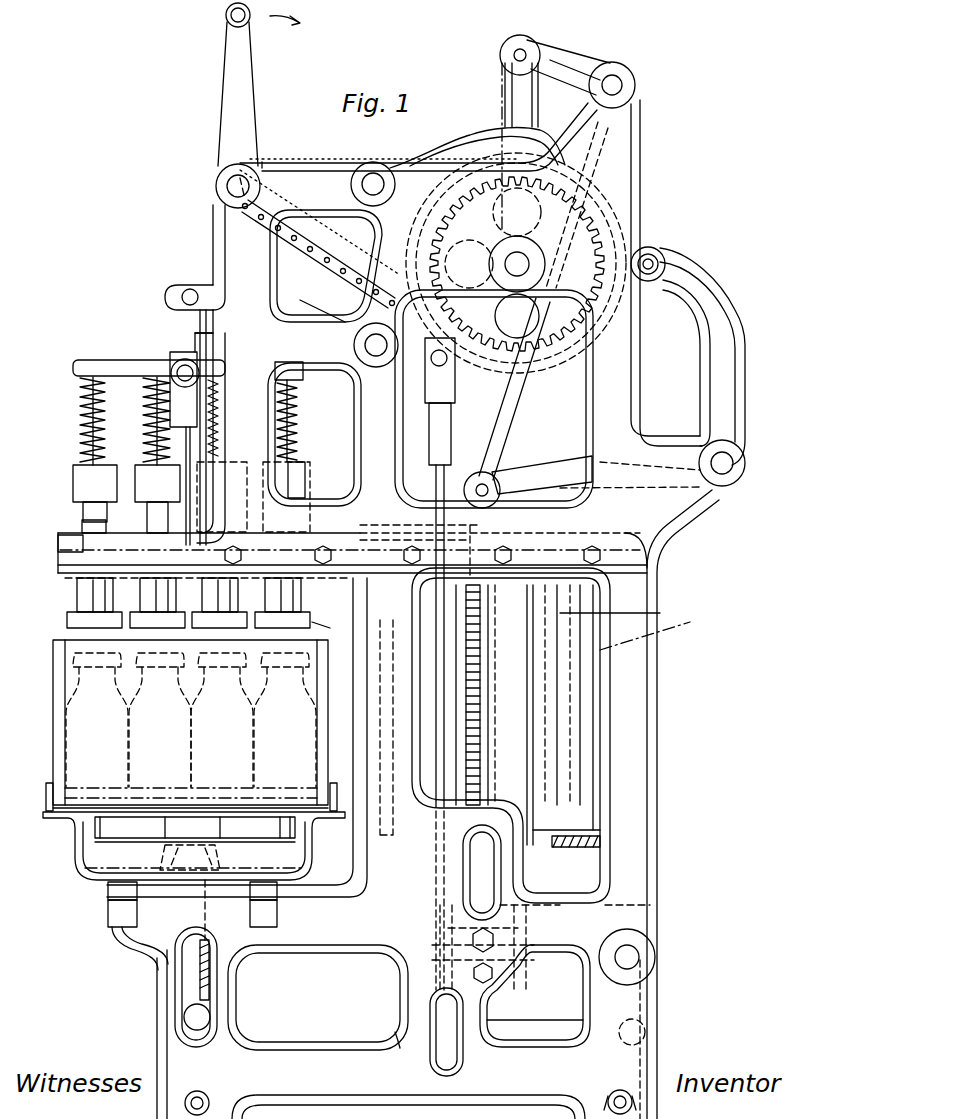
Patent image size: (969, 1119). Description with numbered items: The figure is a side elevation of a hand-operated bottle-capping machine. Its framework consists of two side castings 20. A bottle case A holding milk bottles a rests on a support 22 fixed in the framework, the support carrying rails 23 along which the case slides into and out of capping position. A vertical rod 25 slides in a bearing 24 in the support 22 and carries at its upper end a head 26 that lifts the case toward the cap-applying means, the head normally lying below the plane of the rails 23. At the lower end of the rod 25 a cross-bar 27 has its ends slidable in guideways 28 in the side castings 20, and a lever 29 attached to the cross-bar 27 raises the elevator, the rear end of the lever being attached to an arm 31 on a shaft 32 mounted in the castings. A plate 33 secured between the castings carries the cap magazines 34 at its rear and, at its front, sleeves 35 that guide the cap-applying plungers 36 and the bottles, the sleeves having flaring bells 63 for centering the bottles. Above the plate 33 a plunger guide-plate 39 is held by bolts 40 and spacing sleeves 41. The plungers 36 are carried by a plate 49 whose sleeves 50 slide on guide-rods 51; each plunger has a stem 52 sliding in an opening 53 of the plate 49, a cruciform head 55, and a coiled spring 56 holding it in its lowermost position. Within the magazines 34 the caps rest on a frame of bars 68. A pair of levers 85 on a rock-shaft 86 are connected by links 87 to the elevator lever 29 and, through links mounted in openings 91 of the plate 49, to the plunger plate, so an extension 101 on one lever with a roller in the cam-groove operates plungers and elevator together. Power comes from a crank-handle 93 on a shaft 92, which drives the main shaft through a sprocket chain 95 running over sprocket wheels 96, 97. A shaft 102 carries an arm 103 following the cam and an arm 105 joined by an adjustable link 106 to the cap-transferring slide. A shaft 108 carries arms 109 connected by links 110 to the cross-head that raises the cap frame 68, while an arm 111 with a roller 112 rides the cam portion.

The side castings 20 is at (640, 186).
The support 22 is at (100, 860).
The rails 23 is at (48, 810).
The bearing 24 is at (178, 890).
The vertical rod 25 is at (193, 987).
The head 26 is at (252, 815).
The cross-bar 27 is at (197, 1017).
The guideways 28 is at (210, 968).
The lever 29 is at (395, 1032).
The arm 31 is at (600, 1003).
The shaft 32 is at (640, 952).
The plate 33 is at (68, 578).
The cap magazines 34 is at (660, 613).
The sleeves 35 is at (76, 602).
The cap-applying plungers 36 is at (73, 483).
The plunger guide-plate 39 is at (58, 542).
The bolts 40 is at (82, 520).
The spacing sleeves 41 is at (62, 565).
The plate 49 is at (128, 360).
The sleeves 50 is at (170, 405).
The guide-rods 51 is at (186, 440).
The stem 52 is at (82, 400).
The opening 53 is at (92, 360).
The head 55 is at (302, 478).
The coiled springs 56 is at (298, 432).
The bells 63 is at (337, 631).
The bars 68 is at (548, 848).
The levers 85 is at (412, 420).
The rock-shaft 86 is at (306, 382).
The links 87 is at (436, 478).
The openings 91 is at (518, 263).
The shaft 92 is at (216, 200).
The crank-handle 93 is at (228, 140).
The sprocket chain 95 is at (282, 155).
The sprocket wheel 96 is at (321, 249).
The sprocket wheel 97 is at (318, 256).
The extension 101 is at (519, 107).
The shaft 102 is at (622, 80).
The arm 103 is at (558, 45).
The arm 105 is at (618, 160).
The adjustable link 106 is at (420, 539).
The shaft 108 is at (740, 468).
The arms 109 is at (525, 470).
The links 110 is at (485, 738).
The arm 111 is at (730, 368).
The roller 112 is at (655, 250).
The milk bottles a is at (78, 684).
The bottle cases A is at (55, 712).